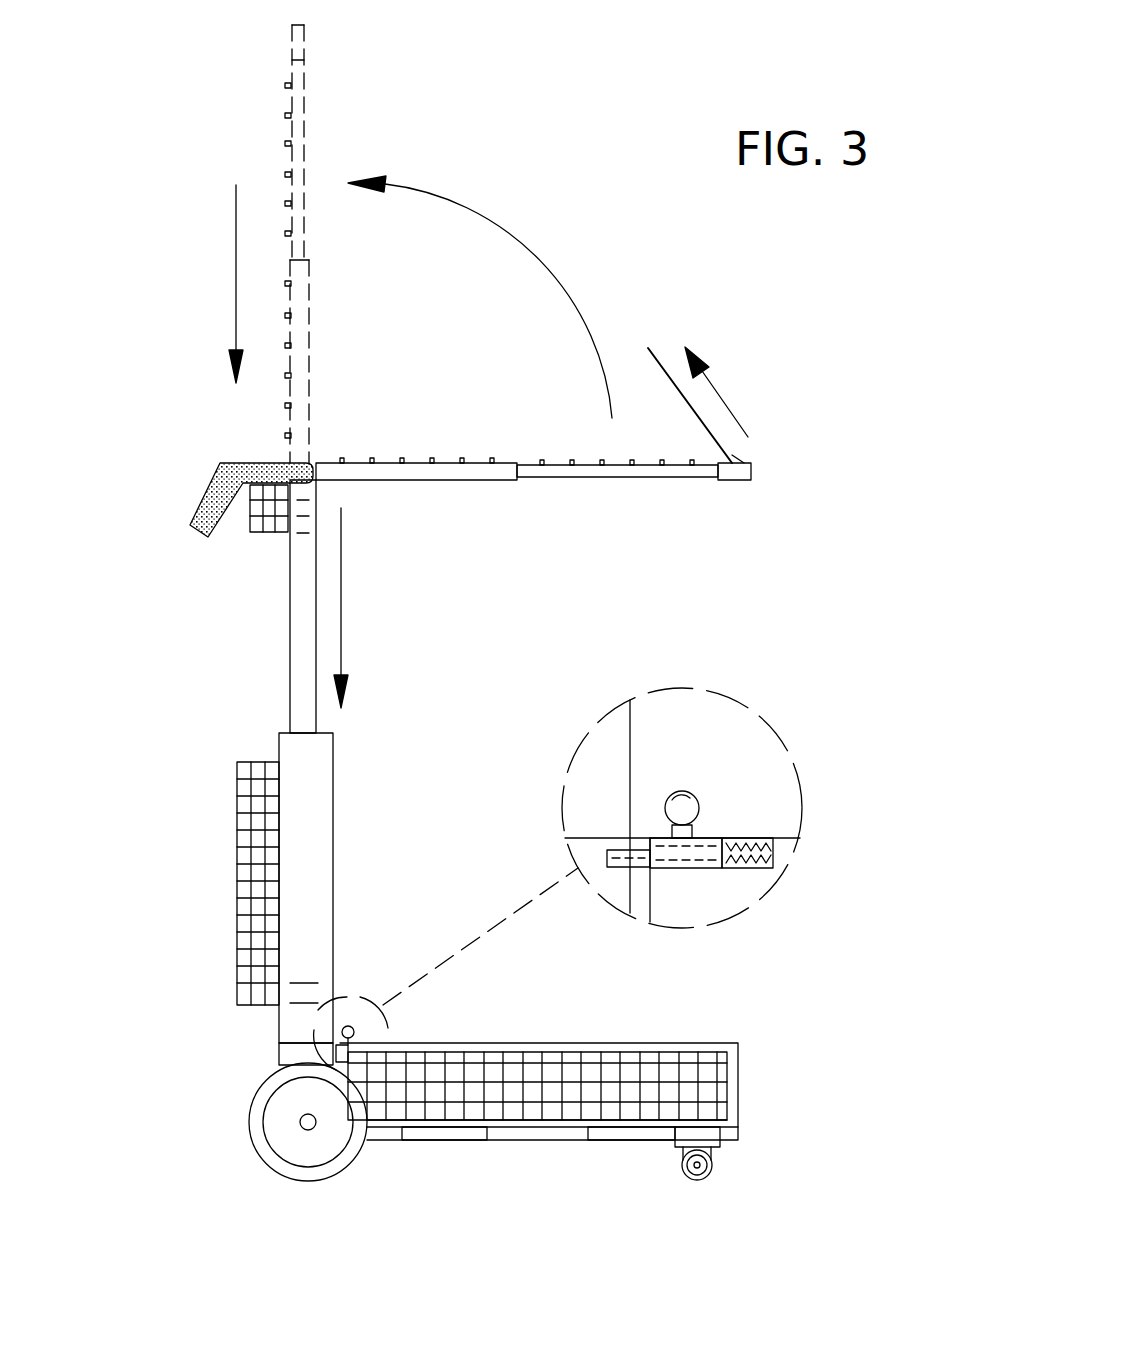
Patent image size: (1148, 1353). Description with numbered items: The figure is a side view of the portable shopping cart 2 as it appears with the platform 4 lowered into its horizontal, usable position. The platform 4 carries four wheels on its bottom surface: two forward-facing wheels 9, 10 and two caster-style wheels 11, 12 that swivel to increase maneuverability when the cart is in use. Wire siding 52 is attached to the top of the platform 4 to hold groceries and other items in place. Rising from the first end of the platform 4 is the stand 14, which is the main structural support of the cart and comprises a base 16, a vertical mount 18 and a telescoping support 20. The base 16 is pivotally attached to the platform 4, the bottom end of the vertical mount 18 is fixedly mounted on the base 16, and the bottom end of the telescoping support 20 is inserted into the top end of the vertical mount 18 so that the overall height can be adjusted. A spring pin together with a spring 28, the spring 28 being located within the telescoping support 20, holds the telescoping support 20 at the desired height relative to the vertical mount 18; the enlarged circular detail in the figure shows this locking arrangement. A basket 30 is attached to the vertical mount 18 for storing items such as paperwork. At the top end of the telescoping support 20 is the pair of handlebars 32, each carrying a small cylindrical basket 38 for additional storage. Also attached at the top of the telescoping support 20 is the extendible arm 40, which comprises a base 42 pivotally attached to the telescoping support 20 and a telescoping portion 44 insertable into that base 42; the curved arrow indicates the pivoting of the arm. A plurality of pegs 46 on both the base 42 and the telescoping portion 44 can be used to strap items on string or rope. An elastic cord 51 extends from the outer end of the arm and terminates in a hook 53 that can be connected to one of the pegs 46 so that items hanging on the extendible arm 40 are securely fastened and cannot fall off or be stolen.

The portable shopping cart 2 is at (855, 686).
The platform 4 is at (539, 1128).
The wheel 9 is at (216, 1138).
The wheel 10 is at (250, 1120).
The caster-style wheel 11 is at (696, 1198).
The caster-style wheel 12 is at (693, 1179).
The stand 14 is at (256, 881).
The base 16 is at (279, 1050).
The vertical mount 18 is at (300, 855).
The telescoping support 20 is at (289, 636).
The spring 28 is at (760, 838).
The basket 30 is at (255, 810).
The pair of handlebars 32 is at (200, 506).
The cylindrical basket 38 is at (265, 534).
The extendible arm 40 is at (533, 495).
The base 42 is at (447, 463).
The telescoping portion 44 is at (553, 463).
The pegs 46 is at (372, 463).
The elastic cord 51 is at (732, 455).
The wire siding 52 is at (588, 1064).
The hook 53 is at (649, 347).